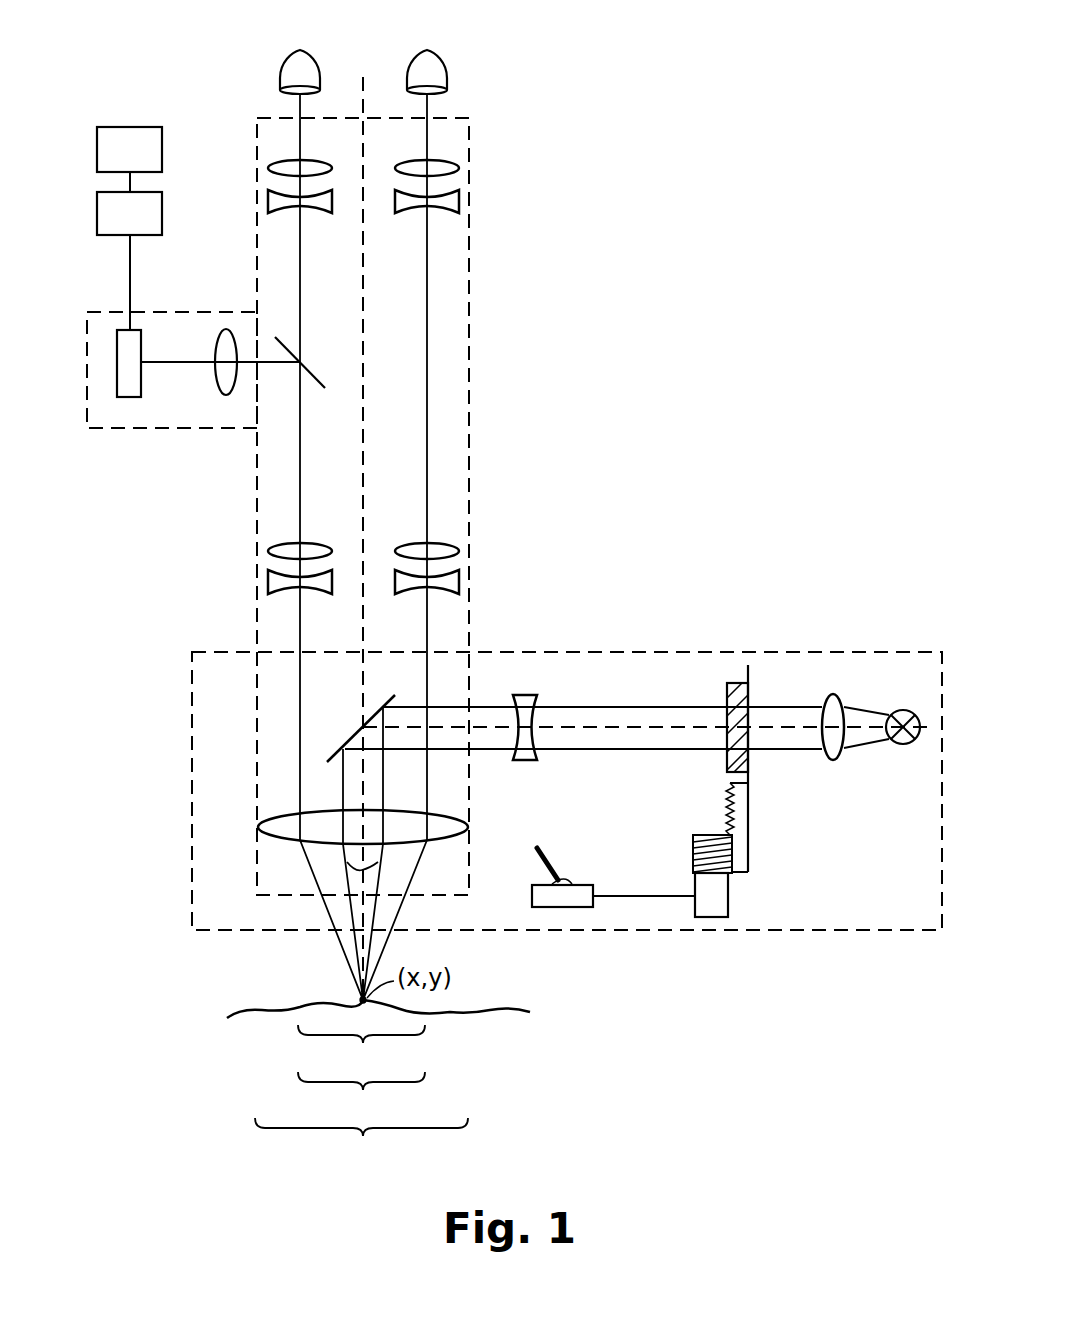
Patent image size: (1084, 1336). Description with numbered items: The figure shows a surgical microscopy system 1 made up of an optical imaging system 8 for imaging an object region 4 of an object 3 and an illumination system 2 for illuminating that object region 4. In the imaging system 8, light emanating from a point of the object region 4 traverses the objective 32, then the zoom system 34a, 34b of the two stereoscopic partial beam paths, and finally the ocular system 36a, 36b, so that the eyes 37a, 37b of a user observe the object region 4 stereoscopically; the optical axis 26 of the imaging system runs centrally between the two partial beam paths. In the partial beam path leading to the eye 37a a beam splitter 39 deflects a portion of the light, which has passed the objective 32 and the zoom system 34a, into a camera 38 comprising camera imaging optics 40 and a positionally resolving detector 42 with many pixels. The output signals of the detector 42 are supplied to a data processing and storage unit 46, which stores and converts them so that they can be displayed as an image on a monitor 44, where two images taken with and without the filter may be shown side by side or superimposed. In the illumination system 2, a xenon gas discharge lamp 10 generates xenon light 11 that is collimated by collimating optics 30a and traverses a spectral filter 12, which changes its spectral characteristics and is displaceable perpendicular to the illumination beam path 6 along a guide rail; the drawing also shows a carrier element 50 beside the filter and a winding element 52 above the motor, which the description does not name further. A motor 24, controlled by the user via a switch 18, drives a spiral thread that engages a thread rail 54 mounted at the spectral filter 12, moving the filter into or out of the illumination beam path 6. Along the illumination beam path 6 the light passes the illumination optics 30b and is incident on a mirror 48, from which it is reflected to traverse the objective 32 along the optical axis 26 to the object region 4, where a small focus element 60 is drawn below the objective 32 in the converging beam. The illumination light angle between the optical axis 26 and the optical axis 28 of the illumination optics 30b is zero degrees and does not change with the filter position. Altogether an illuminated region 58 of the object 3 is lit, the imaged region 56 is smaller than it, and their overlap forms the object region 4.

The surgical microscopy system 1 is at (662, 210).
The illumination system 2 is at (858, 930).
The object 3 is at (466, 1022).
The object region 4 is at (361, 1049).
The illumination beam path 6 is at (626, 732).
The optical imaging system 8 is at (469, 348).
The xenon gas discharge lamp 10 is at (905, 745).
The xenon light 11 is at (863, 737).
The spectral filter 12 is at (727, 690).
The switch 18 is at (578, 884).
The motor 24 is at (728, 897).
The optical axis 26 is at (363, 270).
The optical axis of the illumination optics 28 is at (362, 904).
The collimating optics 30a is at (833, 762).
The illumination optics 30b is at (525, 760).
The objective 32 is at (268, 844).
The zoom system 34a is at (255, 537).
The zoom system 34b is at (473, 537).
The ocular system 36a is at (255, 153).
The ocular system 36b is at (473, 153).
The eye 37a is at (314, 66).
The eye 37b is at (441, 66).
The camera 38 is at (132, 428).
The beam splitter 39 is at (313, 367).
The camera imaging optics 40 is at (218, 385).
The positionally resolving detector 42 is at (141, 343).
The monitor 44 is at (130, 127).
The data processing and storage unit 46 is at (112, 235).
The mirror 48 is at (352, 737).
The plate 50 is at (748, 672).
The coil 52 is at (693, 850).
The thread rail 54 is at (727, 807).
The imaged region 56 is at (361, 1096).
The illuminated region 58 is at (361, 1143).
The focus region 60 is at (357, 873).